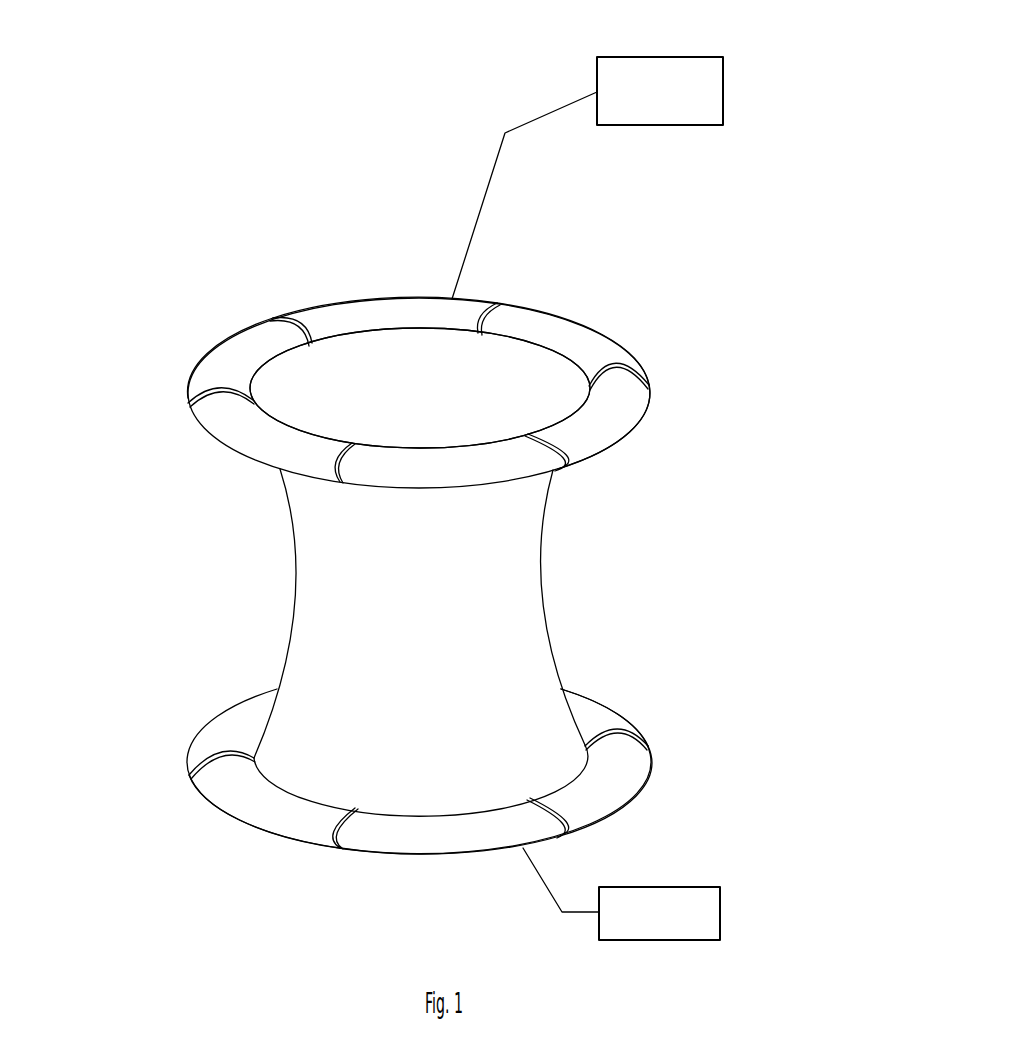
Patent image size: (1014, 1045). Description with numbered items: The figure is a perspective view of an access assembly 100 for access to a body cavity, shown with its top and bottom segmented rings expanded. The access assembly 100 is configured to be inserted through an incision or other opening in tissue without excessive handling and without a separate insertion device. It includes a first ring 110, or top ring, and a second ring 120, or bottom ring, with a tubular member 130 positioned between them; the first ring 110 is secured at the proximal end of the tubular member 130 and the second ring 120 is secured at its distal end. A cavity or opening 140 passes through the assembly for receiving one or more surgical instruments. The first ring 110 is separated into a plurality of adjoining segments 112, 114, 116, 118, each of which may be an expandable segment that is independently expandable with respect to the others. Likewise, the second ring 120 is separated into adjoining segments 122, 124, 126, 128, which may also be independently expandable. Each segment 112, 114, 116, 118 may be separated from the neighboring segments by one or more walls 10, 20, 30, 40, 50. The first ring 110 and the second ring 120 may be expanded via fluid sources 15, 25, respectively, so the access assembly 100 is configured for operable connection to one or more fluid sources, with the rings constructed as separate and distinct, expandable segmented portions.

The wall 10 is at (650, 378).
The fluid source 15 is at (677, 56).
The wall 20 is at (503, 300).
The fluid source 25 is at (670, 941).
The wall 30 is at (282, 318).
The wall 40 is at (192, 417).
The wall 50 is at (337, 488).
The access assembly 100 is at (676, 237).
The first ring 110 is at (163, 403).
The segment 112 is at (650, 405).
The segment 114 is at (563, 300).
The segment 116 is at (335, 296).
The segment 118 is at (250, 327).
The second ring 120 is at (170, 783).
The segment 122 is at (297, 845).
The segment 124 is at (493, 856).
The segment 126 is at (634, 798).
The segment 128 is at (593, 698).
The tubular member 130 is at (277, 557).
The opening 140 is at (493, 410).